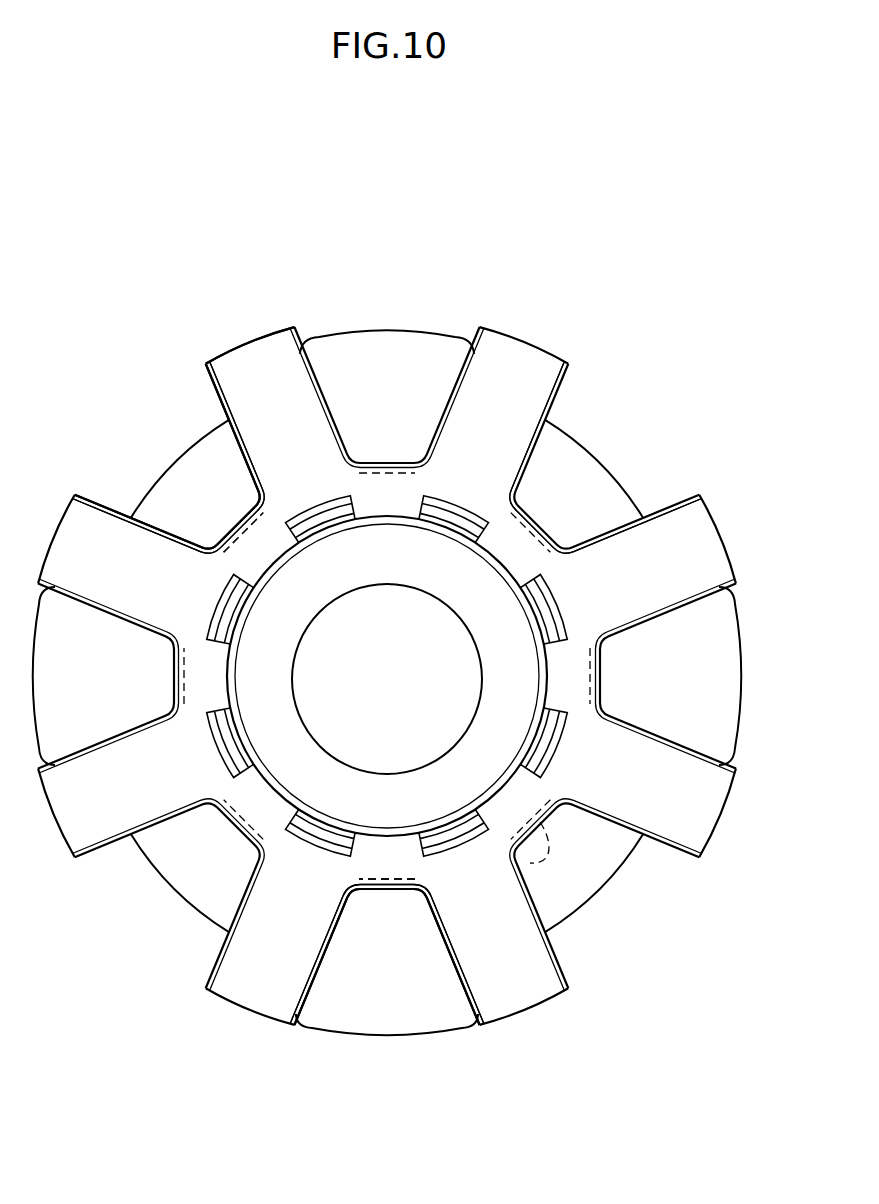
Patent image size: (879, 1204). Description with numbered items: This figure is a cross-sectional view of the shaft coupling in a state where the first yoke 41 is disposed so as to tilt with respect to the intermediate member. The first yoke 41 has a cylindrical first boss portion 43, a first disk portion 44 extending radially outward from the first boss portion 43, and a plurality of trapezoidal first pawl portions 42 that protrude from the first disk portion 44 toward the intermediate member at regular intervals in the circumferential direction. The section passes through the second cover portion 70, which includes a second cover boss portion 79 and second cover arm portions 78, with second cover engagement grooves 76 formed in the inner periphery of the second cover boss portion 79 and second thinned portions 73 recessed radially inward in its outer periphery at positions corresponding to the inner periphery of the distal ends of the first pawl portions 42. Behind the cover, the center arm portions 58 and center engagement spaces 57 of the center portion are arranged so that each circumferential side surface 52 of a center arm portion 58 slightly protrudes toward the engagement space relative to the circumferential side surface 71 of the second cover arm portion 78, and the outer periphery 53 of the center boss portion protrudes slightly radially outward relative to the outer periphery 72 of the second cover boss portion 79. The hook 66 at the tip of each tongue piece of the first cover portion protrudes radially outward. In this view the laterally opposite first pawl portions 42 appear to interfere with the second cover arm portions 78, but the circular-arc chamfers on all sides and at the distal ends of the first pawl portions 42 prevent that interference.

The first yoke 41 is at (362, 323).
The first pawl portion 42 is at (390, 358).
The first boss portion 43 is at (388, 548).
The first disk portion 44 is at (213, 490).
The circumferential side surface 52 is at (303, 345).
The outer periphery 53 is at (243, 838).
The center engagement space 57 is at (145, 447).
The center arm portion 58 is at (672, 848).
The hook 66 is at (467, 528).
The second cover portion 70 is at (272, 328).
The circumferential side surface 71 is at (338, 368).
The outer periphery 72 is at (138, 846).
The second thinned portion 73 is at (540, 822).
The second cover engagement groove 76 is at (443, 493).
The second cover arm portion 78 is at (253, 390).
The second cover boss portion 79 is at (383, 853).